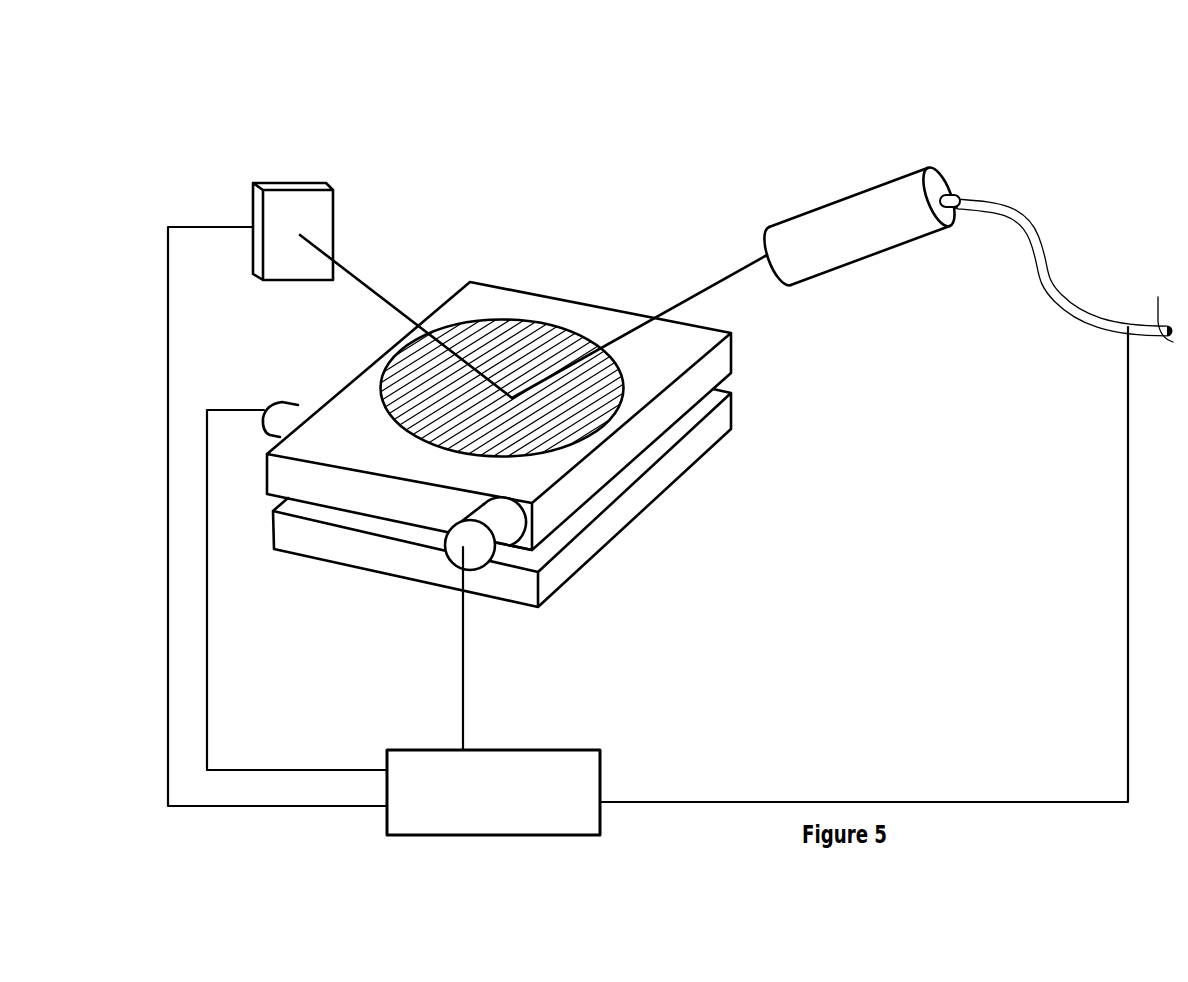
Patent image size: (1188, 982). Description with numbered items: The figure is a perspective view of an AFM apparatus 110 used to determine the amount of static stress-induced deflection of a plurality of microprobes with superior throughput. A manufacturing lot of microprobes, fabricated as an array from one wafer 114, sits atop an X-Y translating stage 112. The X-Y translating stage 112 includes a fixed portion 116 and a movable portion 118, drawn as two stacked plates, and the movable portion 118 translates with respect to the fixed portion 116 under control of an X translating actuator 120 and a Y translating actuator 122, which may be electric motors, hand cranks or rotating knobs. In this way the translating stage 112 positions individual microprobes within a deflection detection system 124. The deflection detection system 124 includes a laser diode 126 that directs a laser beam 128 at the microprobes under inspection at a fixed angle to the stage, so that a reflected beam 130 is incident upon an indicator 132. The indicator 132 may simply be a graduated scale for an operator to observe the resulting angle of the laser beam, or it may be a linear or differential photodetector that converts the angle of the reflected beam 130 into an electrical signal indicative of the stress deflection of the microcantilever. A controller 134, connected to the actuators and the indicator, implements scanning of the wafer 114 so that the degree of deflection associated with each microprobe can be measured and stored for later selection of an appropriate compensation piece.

The AFM apparatus 110 is at (519, 336).
The X-Y translating stage 112 is at (519, 409).
The wafer 114 is at (502, 274).
The fixed portion 116 is at (272, 528).
The movable portion 118 is at (265, 472).
The X translating actuator 120 is at (458, 557).
The Y translating actuator 122 is at (302, 402).
The deflection detection system 124 is at (947, 87).
The laser diode 126 is at (880, 183).
The laser beam 128 is at (686, 207).
The reflected beam 130 is at (352, 273).
The indicator 132 is at (277, 187).
The controller 134 is at (567, 750).